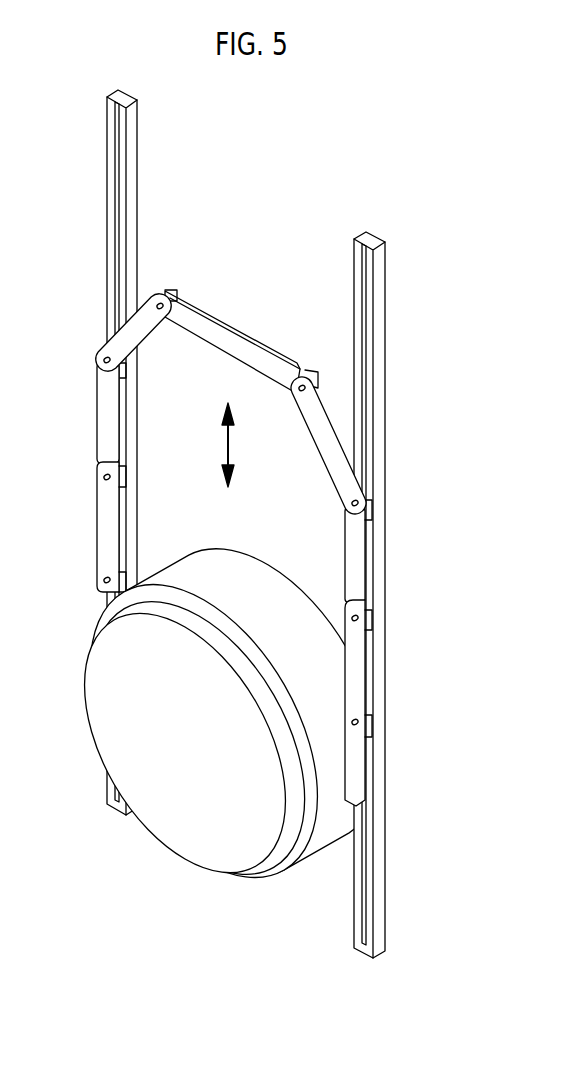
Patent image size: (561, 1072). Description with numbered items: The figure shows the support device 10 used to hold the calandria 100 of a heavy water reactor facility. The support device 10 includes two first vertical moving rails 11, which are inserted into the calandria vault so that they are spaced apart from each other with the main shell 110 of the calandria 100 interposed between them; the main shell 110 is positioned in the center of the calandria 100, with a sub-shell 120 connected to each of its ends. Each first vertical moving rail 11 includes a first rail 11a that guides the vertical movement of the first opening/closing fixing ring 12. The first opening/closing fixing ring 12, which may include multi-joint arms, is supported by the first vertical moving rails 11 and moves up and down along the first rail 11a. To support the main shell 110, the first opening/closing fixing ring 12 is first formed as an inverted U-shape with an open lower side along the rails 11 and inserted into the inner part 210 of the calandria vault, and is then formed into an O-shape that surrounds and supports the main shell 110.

The support device 10 is at (397, 595).
The first vertical moving rail 11 is at (393, 595).
The first rail 11a is at (364, 295).
The first opening/closing fixing ring 12 is at (357, 660).
The calandria 100 is at (287, 712).
The main shell 110 is at (320, 704).
The sub-shell 120 is at (260, 766).
The inner part 210 is at (233, 501).